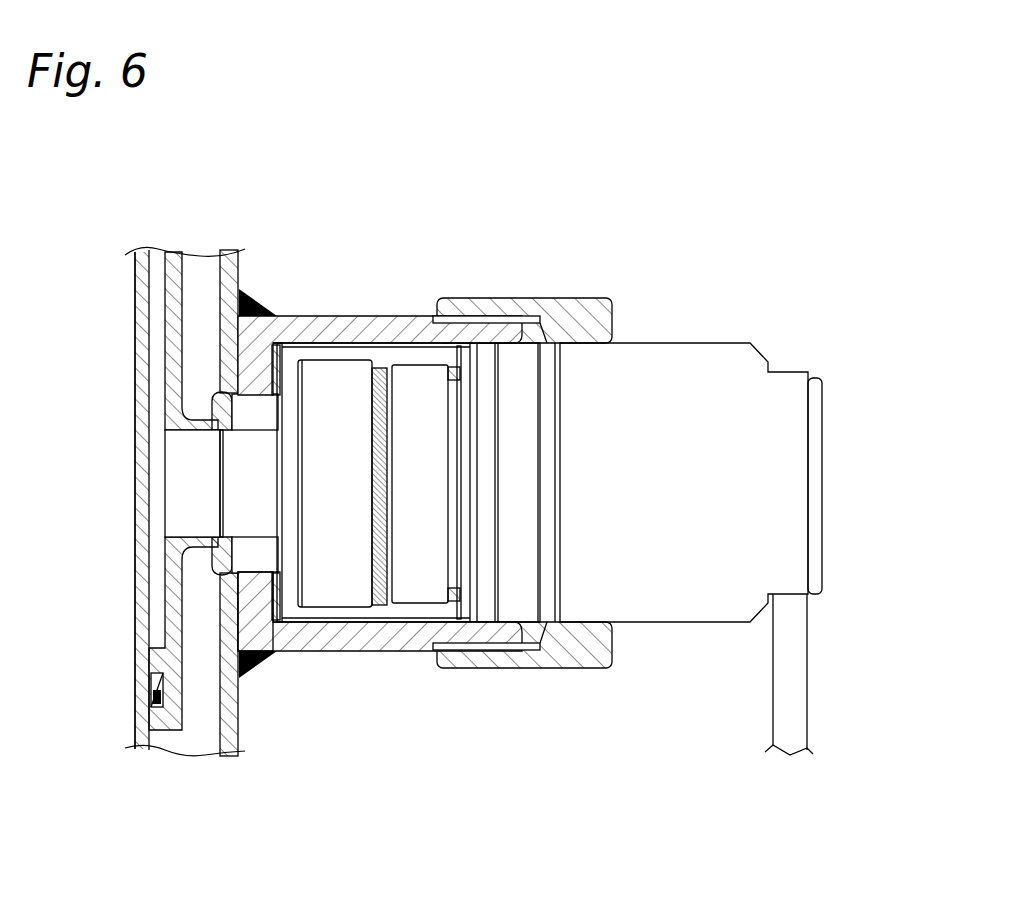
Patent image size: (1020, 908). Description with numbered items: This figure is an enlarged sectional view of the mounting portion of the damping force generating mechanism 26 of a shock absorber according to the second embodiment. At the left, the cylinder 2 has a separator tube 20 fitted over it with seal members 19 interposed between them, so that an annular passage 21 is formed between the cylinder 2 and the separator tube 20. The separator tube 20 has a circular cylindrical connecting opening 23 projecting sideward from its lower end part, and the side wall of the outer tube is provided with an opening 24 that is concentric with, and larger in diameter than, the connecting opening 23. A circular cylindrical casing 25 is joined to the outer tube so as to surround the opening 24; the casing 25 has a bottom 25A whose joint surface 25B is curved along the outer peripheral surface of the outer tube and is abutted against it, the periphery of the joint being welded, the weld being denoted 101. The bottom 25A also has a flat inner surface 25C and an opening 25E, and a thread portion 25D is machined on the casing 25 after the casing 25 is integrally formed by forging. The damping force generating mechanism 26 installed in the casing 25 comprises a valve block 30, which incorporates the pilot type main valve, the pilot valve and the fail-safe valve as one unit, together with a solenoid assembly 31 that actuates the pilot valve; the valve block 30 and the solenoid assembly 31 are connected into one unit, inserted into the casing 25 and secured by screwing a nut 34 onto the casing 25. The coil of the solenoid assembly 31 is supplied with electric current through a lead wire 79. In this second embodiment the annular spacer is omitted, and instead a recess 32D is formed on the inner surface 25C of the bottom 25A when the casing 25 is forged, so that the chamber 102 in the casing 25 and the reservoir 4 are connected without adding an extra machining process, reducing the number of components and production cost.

The cylinder 2 is at (134, 291).
The reservoir 4 is at (242, 290).
The seal member 19 is at (150, 684).
The separator tube 20 is at (190, 278).
The annular passage 21 is at (157, 248).
The connecting opening 23 is at (205, 557).
The opening 24 is at (213, 412).
The casing 25 is at (395, 330).
The bottom 25A is at (253, 370).
The joint surface 25B is at (250, 335).
The inner surface 25C is at (303, 330).
The thread portion 25D is at (485, 320).
The opening 25E is at (217, 440).
The damping force generating mechanism 26 is at (337, 446).
The valve block 30 is at (398, 608).
The solenoid assembly 31 is at (662, 332).
The recess 32D is at (278, 625).
The nut 34 is at (572, 298).
The lead wire 79 is at (793, 670).
The weld 101 is at (265, 660).
The chamber 102 is at (343, 330).